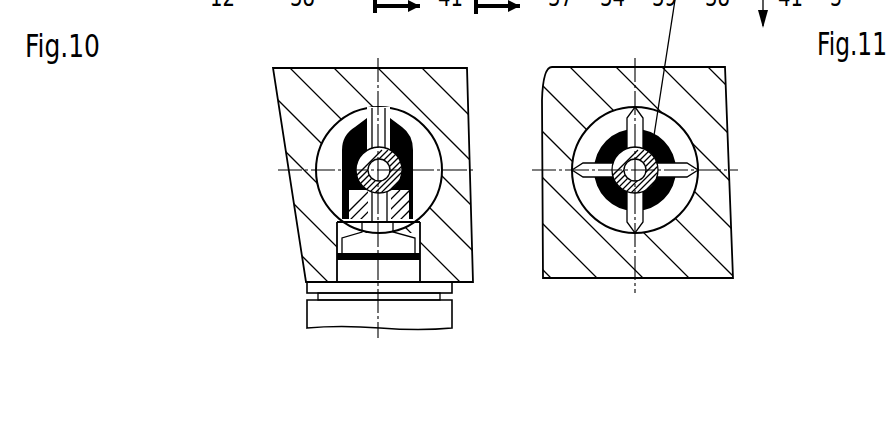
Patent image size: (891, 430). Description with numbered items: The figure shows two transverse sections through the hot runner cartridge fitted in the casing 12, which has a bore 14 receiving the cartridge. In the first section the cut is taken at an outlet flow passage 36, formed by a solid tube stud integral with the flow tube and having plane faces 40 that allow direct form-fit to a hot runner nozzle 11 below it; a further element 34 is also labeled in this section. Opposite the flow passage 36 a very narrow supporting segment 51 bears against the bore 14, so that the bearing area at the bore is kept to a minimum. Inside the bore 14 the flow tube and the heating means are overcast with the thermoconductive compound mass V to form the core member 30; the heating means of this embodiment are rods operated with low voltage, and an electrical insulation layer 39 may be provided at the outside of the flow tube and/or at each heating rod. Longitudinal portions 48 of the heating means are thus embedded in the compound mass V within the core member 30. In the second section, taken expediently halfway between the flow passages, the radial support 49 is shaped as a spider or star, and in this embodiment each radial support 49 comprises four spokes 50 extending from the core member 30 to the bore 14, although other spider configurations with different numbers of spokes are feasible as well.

In FIG. 10, the hot runner nozzle 11 is at (461, 355).
In FIG. 10, the casing 12 is at (560, 262).
In FIG. 11, the casing 12 is at (560, 262).
In FIG. 10, the bore 14 is at (573, 123).
In FIG. 11, the bore 14 is at (635, 170).
In FIG. 10, the core member 30 is at (592, 137).
In FIG. 10, the bushing 34 is at (366, 165).
In FIG. 11, the bushing 34 is at (637, 173).
In FIG. 10, the flow passage (outlet) 36 is at (307, 280).
In FIG. 10, the electrical insulation layer 39 is at (362, 150).
In FIG. 10, the plane faces 40 is at (342, 222).
In FIG. 10, the longitudinal portions of the heating coil 48 is at (352, 187).
In FIG. 11, the longitudinal portions of the heating coil 48 is at (672, 146).
In FIG. 11, the radial support 49 is at (615, 228).
In FIG. 11, the spokes 50 is at (590, 200).
In FIG. 10, the supporting segment 51 is at (375, 122).
In FIG. 10, the compound mass V is at (773, 192).